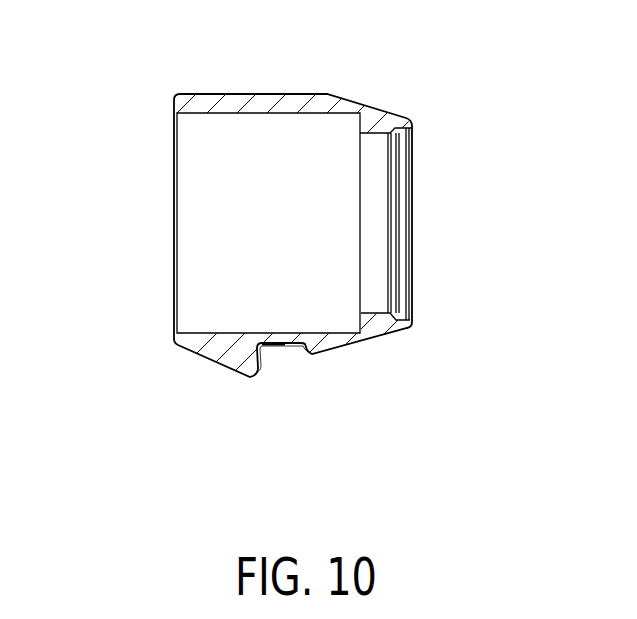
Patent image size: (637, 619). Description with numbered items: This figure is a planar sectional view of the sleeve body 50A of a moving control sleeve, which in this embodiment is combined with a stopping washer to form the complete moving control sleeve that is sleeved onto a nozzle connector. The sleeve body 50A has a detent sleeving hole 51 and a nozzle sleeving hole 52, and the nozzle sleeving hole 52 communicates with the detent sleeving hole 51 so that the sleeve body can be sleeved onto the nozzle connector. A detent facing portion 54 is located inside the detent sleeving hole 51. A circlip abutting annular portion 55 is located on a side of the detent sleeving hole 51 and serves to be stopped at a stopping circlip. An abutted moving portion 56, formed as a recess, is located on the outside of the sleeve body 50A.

The sleeve body 50A is at (138, 258).
The detent sleeving hole 51 is at (227, 113).
The nozzle sleeving hole 52 is at (373, 135).
The detent facing portion 54 is at (360, 132).
The circlip abutting annular portion 55 is at (390, 317).
The abutted moving portion 56 is at (270, 352).